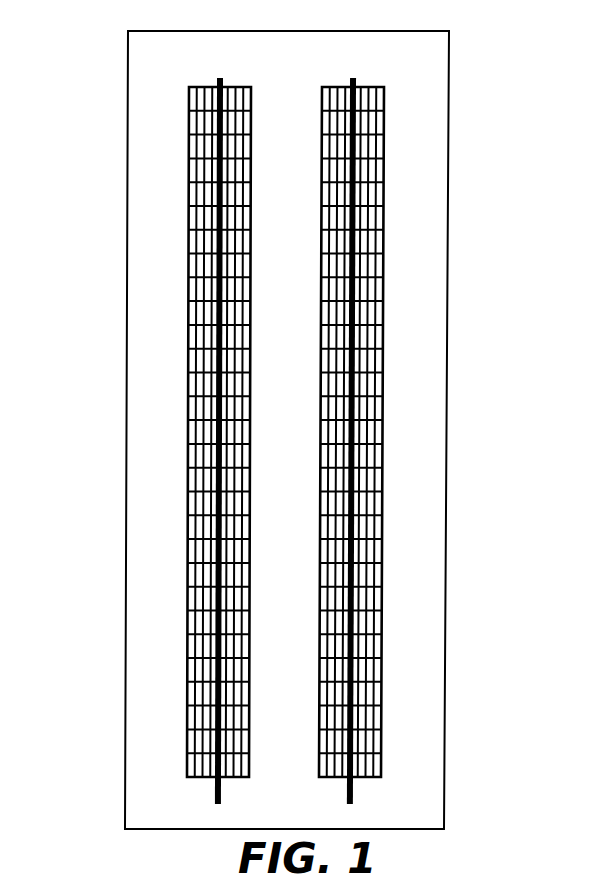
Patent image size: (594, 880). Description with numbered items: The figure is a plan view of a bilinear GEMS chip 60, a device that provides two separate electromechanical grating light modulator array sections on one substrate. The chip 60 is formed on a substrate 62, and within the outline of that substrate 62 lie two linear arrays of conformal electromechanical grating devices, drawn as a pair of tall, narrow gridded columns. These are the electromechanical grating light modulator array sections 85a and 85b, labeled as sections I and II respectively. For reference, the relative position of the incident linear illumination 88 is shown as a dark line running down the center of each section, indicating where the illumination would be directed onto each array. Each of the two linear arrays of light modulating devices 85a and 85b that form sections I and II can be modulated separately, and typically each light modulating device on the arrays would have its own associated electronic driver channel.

The bilinear GEMS chip 60 is at (445, 731).
The substrate 62 is at (425, 362).
The electromechanical grating light modulator array section 85a is at (190, 105).
The electromechanical grating light modulator array section 85b is at (383, 165).
The incident linear illumination 88 is at (215, 668).